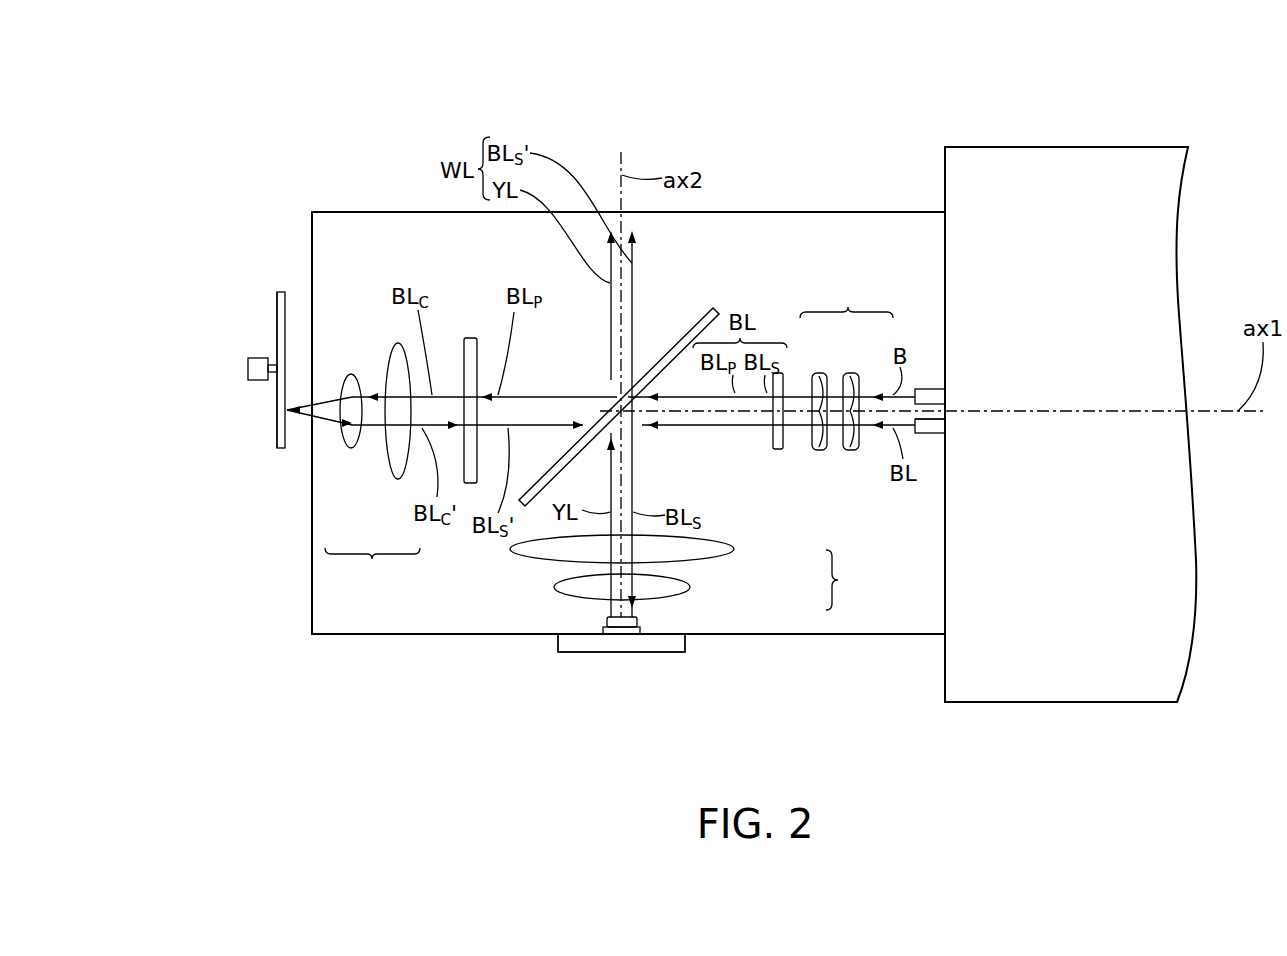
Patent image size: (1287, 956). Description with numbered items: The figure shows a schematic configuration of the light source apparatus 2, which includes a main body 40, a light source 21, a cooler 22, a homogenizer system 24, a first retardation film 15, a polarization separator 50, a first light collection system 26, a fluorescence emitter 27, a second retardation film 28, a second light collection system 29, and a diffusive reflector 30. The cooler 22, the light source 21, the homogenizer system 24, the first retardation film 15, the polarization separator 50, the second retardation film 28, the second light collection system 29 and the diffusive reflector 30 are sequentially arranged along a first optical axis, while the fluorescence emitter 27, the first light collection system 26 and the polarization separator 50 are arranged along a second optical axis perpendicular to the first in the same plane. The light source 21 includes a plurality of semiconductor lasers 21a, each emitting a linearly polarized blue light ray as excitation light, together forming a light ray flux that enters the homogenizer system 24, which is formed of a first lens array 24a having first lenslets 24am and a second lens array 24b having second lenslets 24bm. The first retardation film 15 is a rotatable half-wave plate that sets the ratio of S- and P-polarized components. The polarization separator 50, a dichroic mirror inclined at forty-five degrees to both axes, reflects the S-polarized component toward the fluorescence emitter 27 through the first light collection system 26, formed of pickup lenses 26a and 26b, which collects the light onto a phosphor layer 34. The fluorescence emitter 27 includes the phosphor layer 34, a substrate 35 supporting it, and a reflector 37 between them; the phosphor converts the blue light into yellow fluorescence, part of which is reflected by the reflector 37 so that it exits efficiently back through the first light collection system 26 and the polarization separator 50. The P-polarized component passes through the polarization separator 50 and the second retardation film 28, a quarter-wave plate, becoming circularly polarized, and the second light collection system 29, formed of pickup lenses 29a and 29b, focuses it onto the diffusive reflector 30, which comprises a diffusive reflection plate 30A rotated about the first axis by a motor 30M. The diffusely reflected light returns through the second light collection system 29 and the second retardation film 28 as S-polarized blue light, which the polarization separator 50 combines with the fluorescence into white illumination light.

The light source apparatus 2 is at (980, 108).
The first retardation film 15 is at (776, 452).
The light source 21 is at (933, 373).
The semiconductor laser 21a is at (928, 435).
The cooler 22 is at (1008, 704).
The homogenizer system 24 is at (846, 300).
The first lens array 24a is at (851, 373).
The first lenslet 24am is at (858, 452).
The second lens array 24b is at (819, 373).
The second lenslet 24bm is at (826, 452).
The first light collection system 26 is at (848, 580).
The pickup lens 26a is at (735, 550).
The pickup lens 26b is at (690, 587).
The fluorescence emitter 27 is at (700, 645).
The second retardation film 28 is at (470, 338).
The second light collection system 29 is at (372, 568).
The pickup lens 29a is at (400, 481).
The pickup lens 29b is at (349, 449).
The diffusive reflector 30 is at (279, 280).
The diffusive reflection plate 30A is at (282, 450).
The motor 30M is at (256, 357).
The phosphor layer 34 is at (640, 622).
The substrate 35 is at (612, 653).
The reflector 37 is at (600, 637).
The main body 40 is at (868, 636).
The polarization separator 50 is at (678, 347).